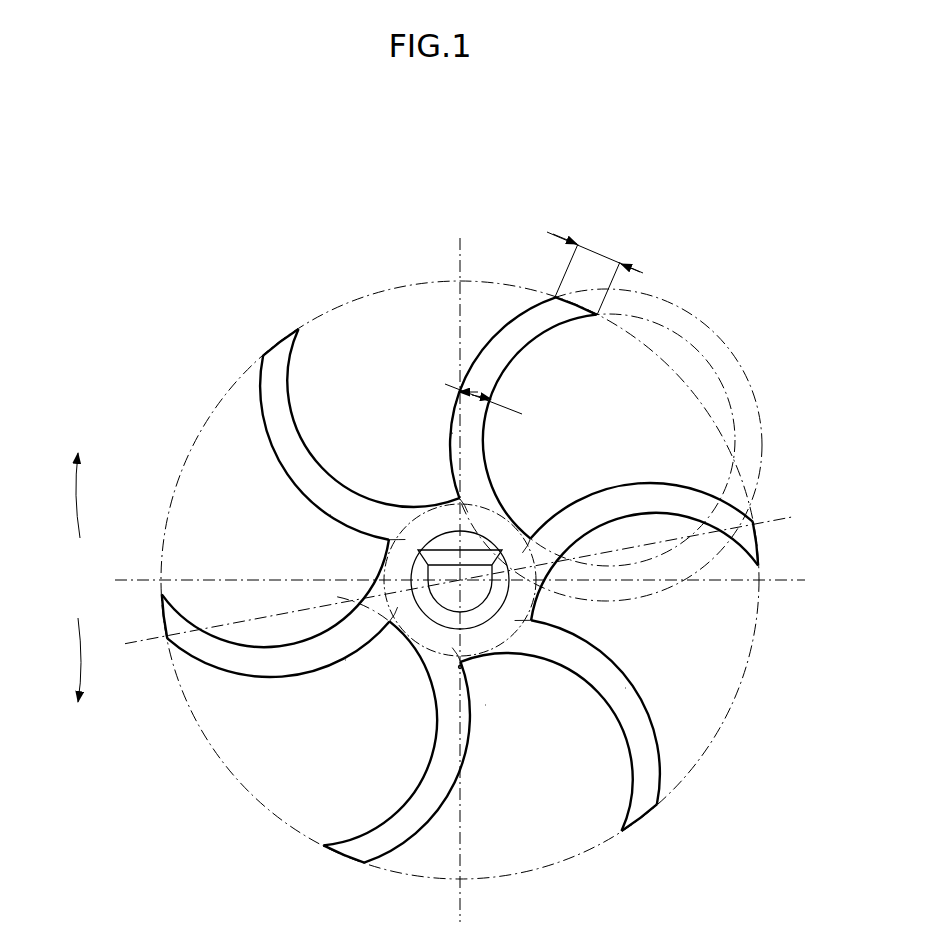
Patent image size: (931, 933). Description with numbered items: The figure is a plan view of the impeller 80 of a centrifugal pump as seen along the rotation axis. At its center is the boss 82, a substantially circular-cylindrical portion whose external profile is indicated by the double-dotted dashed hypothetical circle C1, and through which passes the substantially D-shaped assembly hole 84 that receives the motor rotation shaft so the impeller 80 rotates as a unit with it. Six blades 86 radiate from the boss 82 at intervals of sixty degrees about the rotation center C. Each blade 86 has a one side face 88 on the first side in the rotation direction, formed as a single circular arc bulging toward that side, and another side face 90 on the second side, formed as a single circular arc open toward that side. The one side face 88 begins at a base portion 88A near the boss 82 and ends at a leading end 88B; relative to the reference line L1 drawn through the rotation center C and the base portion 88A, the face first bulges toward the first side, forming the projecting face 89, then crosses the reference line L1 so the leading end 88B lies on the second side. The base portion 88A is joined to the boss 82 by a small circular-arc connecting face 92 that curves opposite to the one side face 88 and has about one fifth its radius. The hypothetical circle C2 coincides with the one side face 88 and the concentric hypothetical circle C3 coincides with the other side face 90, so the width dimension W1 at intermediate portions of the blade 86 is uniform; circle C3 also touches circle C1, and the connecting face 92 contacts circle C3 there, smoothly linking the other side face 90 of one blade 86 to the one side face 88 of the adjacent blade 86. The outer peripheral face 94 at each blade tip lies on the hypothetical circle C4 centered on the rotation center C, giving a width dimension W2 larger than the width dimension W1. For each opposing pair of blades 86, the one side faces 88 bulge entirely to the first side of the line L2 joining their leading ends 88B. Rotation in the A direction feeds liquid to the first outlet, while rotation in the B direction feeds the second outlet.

The impeller 80 is at (776, 246).
The boss 82 is at (410, 641).
The assembly hole 84 is at (494, 618).
The blade 86 is at (454, 585).
The one side face 88 is at (470, 361).
The base portion 88A is at (457, 495).
The leading end 88B is at (553, 296).
The projecting face 89 is at (455, 421).
The other side face 90 is at (335, 475).
The connecting face 92 is at (456, 498).
The outer peripheral face 94 is at (580, 303).
The reference line L1 is at (458, 246).
The line L2 is at (142, 642).
The width dimension W1 is at (478, 385).
The width dimension W2 is at (602, 262).
The hypothetical circle C1 is at (354, 600).
The hypothetical circle C2 is at (742, 353).
The hypothetical circle C3 is at (731, 398).
The hypothetical circle C4 is at (759, 619).
The A direction A is at (75, 650).
The B direction B is at (75, 508).
The rotation center C is at (458, 667).